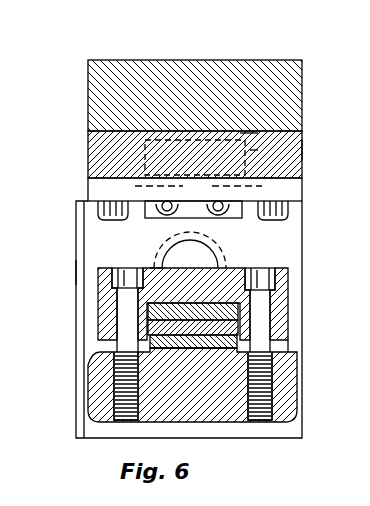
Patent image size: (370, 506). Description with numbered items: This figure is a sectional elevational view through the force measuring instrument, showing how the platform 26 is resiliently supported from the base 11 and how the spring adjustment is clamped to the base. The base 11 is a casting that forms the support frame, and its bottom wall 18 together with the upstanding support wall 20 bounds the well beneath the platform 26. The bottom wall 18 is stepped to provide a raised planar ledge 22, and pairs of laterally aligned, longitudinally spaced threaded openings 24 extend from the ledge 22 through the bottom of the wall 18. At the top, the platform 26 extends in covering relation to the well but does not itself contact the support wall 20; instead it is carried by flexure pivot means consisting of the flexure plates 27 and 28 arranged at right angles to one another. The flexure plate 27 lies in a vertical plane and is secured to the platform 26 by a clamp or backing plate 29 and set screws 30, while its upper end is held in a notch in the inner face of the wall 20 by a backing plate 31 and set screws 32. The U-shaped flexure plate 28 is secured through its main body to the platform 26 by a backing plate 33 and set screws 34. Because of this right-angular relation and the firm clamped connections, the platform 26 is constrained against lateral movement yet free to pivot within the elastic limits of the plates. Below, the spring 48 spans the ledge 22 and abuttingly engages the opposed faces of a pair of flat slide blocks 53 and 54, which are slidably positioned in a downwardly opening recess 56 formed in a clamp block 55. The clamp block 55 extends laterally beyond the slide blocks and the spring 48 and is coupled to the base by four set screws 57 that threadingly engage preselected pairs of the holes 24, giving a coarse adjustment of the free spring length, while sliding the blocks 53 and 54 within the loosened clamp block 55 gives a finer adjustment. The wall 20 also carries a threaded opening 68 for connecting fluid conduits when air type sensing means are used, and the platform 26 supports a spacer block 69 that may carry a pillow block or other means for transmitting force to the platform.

The base 11 is at (71, 279).
The bottom wall 18 is at (300, 388).
The support wall 20 is at (302, 244).
The ledge 22 is at (282, 346).
The threaded openings 24 is at (126, 420).
The platform 26 is at (303, 150).
The flexure plate 27 is at (258, 150).
The flexure plate 28 is at (88, 180).
The backing plate 29 is at (248, 133).
The set screws 30 is at (200, 140).
The backing plate 31 is at (212, 218).
The set screws 32 is at (216, 186).
The backing plate 33 is at (303, 189).
The set screws 34 is at (106, 222).
The spring 48 is at (224, 298).
The slide block 53 is at (192, 305).
The slide block 54 is at (230, 322).
The clamp block 55 is at (158, 267).
The recess 56 is at (164, 302).
The set screws 57 is at (230, 363).
The threaded opening 68 is at (222, 252).
The spacer block 69 is at (256, 62).